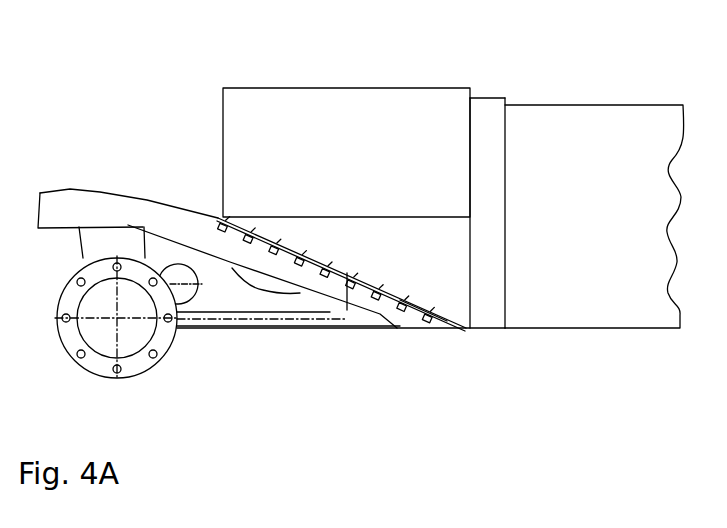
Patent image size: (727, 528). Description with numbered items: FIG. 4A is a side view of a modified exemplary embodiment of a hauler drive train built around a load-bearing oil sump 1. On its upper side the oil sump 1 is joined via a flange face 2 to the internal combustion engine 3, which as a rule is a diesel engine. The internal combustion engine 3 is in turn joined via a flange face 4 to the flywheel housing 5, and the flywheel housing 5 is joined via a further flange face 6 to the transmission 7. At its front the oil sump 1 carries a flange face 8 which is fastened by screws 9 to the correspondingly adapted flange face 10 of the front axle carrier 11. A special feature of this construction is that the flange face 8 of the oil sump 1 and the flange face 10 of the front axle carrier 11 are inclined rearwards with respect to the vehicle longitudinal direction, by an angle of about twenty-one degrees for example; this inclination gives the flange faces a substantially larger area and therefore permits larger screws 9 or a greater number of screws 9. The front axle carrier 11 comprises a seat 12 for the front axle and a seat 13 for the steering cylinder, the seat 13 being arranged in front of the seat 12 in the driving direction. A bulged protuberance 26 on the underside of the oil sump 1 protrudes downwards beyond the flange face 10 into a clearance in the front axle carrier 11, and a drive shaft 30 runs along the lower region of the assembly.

The oil sump 1 is at (413, 245).
The flange face between the oil sump and the internal combustion engine 2 is at (262, 218).
The internal combustion engine 3 is at (247, 105).
The flange face between the internal combustion engine and the flywheel housing 4 is at (466, 111).
The flywheel housing 5 is at (493, 103).
The flange face between the flywheel housing and the transmission 6 is at (507, 310).
The transmission 7 is at (563, 118).
The flange face of the oil sump 8 is at (400, 298).
The screws 9 is at (417, 313).
The flange face of the front axle carrier 10 is at (347, 310).
The front axle carrier 11 is at (102, 249).
The seat for the front axle 12 is at (102, 338).
The seat for the steering cylinder 13 is at (173, 262).
The bulging protuberance of the oil sump 26 is at (263, 283).
The drive shaft 30 is at (213, 320).